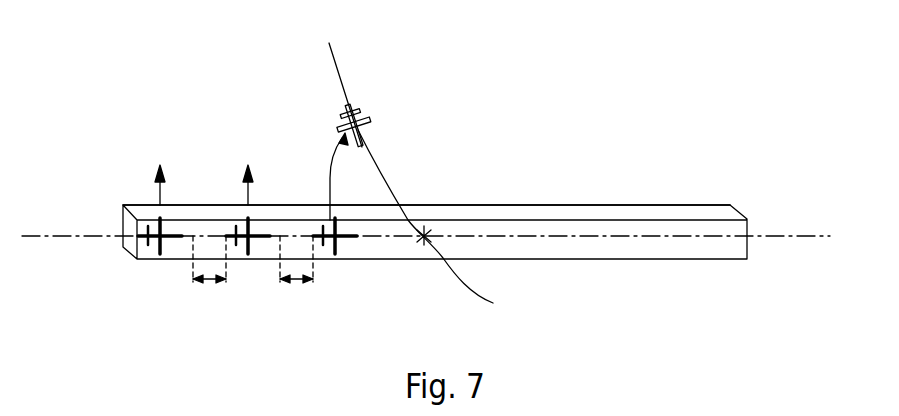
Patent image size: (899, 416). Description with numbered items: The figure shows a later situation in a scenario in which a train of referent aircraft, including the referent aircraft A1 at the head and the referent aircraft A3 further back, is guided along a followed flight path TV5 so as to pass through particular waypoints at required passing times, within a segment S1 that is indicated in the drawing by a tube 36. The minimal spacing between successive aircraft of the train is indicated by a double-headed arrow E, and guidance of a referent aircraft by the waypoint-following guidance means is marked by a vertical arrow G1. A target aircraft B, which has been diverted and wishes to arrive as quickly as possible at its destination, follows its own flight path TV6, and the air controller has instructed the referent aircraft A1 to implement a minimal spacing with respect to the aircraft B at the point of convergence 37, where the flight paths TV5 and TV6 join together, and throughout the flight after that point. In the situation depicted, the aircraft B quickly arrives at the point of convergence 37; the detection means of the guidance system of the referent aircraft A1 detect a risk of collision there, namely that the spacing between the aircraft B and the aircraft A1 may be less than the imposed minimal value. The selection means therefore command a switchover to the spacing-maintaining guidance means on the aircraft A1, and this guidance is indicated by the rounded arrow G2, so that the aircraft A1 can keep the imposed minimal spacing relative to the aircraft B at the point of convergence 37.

The segment S1 is at (535, 205).
The tube 36 is at (683, 205).
The followed flight path TV5 is at (65, 237).
The flight path TV6 is at (343, 73).
The referent aircraft A3 is at (160, 250).
The referent aircraft A1 is at (337, 252).
The vertical arrow G1 is at (248, 192).
The rounded arrow G2 is at (330, 178).
The double-headed arrow E is at (298, 282).
The target aircraft B is at (371, 121).
The point of convergence 37 is at (438, 224).